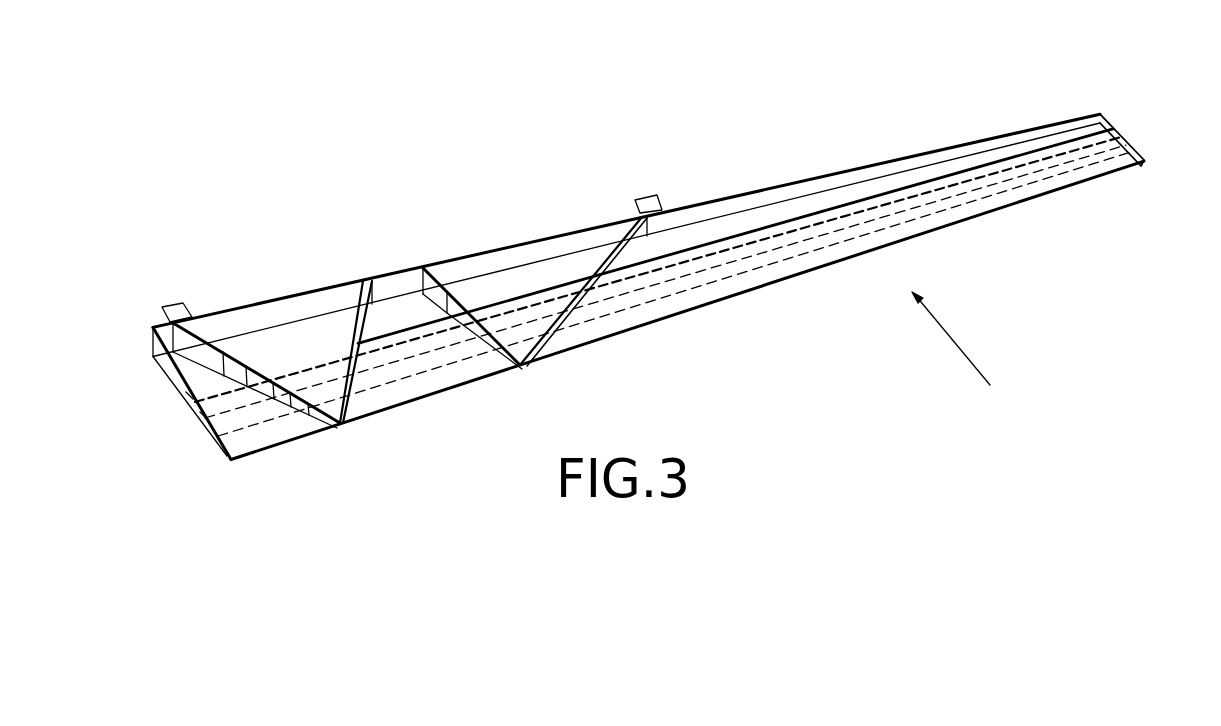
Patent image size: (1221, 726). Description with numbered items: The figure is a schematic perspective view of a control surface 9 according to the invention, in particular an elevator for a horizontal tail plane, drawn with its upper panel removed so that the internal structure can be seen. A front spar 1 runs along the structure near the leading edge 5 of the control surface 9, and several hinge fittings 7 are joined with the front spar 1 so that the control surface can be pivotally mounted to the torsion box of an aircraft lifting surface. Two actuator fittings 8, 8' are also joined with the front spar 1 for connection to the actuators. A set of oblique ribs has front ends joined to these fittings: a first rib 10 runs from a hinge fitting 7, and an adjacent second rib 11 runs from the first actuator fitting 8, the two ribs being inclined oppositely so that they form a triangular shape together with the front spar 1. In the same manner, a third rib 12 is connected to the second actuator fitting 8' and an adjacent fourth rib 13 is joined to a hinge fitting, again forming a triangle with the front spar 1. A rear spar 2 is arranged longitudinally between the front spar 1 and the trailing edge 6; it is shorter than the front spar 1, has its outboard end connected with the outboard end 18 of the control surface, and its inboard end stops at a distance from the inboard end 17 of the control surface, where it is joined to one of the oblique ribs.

The front spar 1 is at (804, 192).
The rear spar 2 is at (980, 178).
The leading edge 5 is at (739, 196).
The trailing edge 6 is at (815, 272).
The hinge fitting 7 is at (178, 303).
The actuator fitting 8 is at (366, 277).
The actuator fitting 8' is at (472, 250).
The control surface 9 is at (957, 355).
The first rib 10 is at (247, 370).
The second rib 11 is at (353, 385).
The third rib 12 is at (466, 313).
The fourth rib 13 is at (611, 270).
The inboard end 17 is at (180, 390).
The outboard end 18 is at (1132, 144).